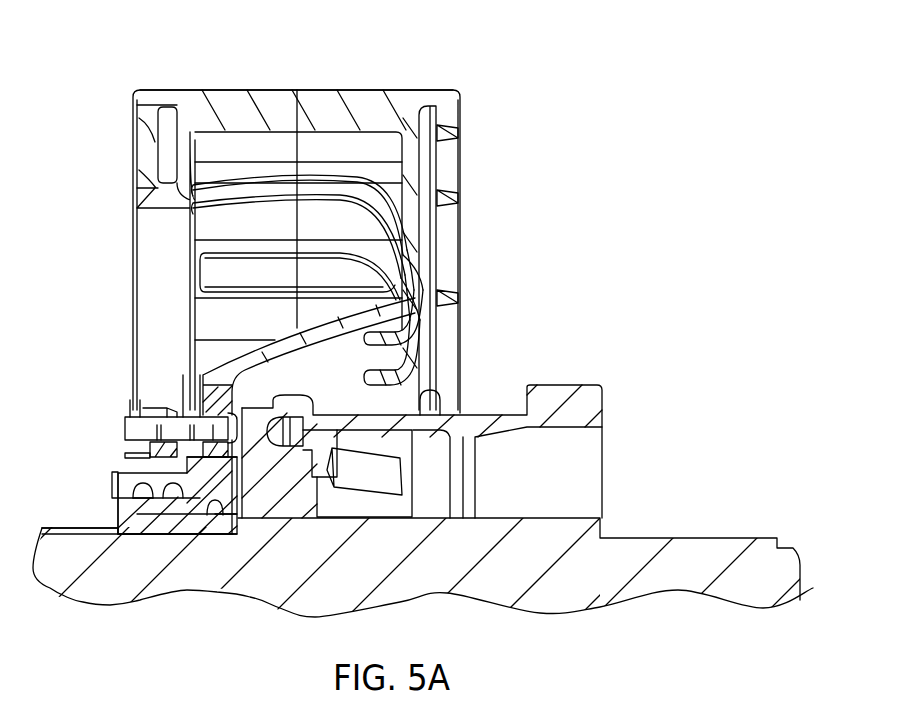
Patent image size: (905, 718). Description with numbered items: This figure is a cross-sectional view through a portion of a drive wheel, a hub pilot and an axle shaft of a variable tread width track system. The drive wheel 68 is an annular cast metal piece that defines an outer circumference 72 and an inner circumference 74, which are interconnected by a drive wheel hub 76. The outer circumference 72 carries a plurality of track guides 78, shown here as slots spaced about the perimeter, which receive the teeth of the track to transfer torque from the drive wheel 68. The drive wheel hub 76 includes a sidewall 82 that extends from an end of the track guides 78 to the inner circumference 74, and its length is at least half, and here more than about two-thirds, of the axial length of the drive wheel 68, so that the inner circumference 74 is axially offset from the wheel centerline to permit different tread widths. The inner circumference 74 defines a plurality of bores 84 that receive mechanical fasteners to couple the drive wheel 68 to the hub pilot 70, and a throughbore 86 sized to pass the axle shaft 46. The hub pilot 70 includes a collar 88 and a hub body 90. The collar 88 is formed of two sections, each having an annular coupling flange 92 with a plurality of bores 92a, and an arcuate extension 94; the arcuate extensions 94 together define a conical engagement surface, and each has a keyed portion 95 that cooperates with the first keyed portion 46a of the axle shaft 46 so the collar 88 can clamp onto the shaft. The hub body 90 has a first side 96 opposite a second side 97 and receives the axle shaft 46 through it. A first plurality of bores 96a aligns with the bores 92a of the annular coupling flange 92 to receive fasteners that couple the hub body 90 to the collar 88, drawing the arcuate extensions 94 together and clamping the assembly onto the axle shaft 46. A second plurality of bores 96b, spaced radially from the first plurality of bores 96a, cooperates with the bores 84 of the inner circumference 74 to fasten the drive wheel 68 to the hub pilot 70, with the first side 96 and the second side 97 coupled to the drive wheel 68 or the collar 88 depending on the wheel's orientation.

The axle shaft 46 is at (458, 579).
The first keyed portion 46a is at (77, 530).
The drive wheel 68 is at (99, 90).
The hub pilot 70 is at (222, 502).
The outer circumference 72 is at (412, 90).
The inner circumference 74 is at (194, 350).
The drive wheel hub 76 is at (300, 360).
The track guides 78 is at (262, 88).
The sidewall 82 is at (350, 347).
The bores 84 is at (178, 398).
The throughbore 86 is at (136, 523).
The collar 88 is at (95, 473).
The hub body 90 is at (185, 400).
The annular coupling flange 92 is at (122, 472).
The bores 92a is at (158, 500).
The arcuate extension 94 is at (223, 503).
The keyed portion 95 is at (132, 532).
The first side 96 is at (208, 452).
The first plurality of bores 96a is at (185, 500).
The second plurality of bores 96b is at (195, 425).
The second side 97 is at (138, 455).